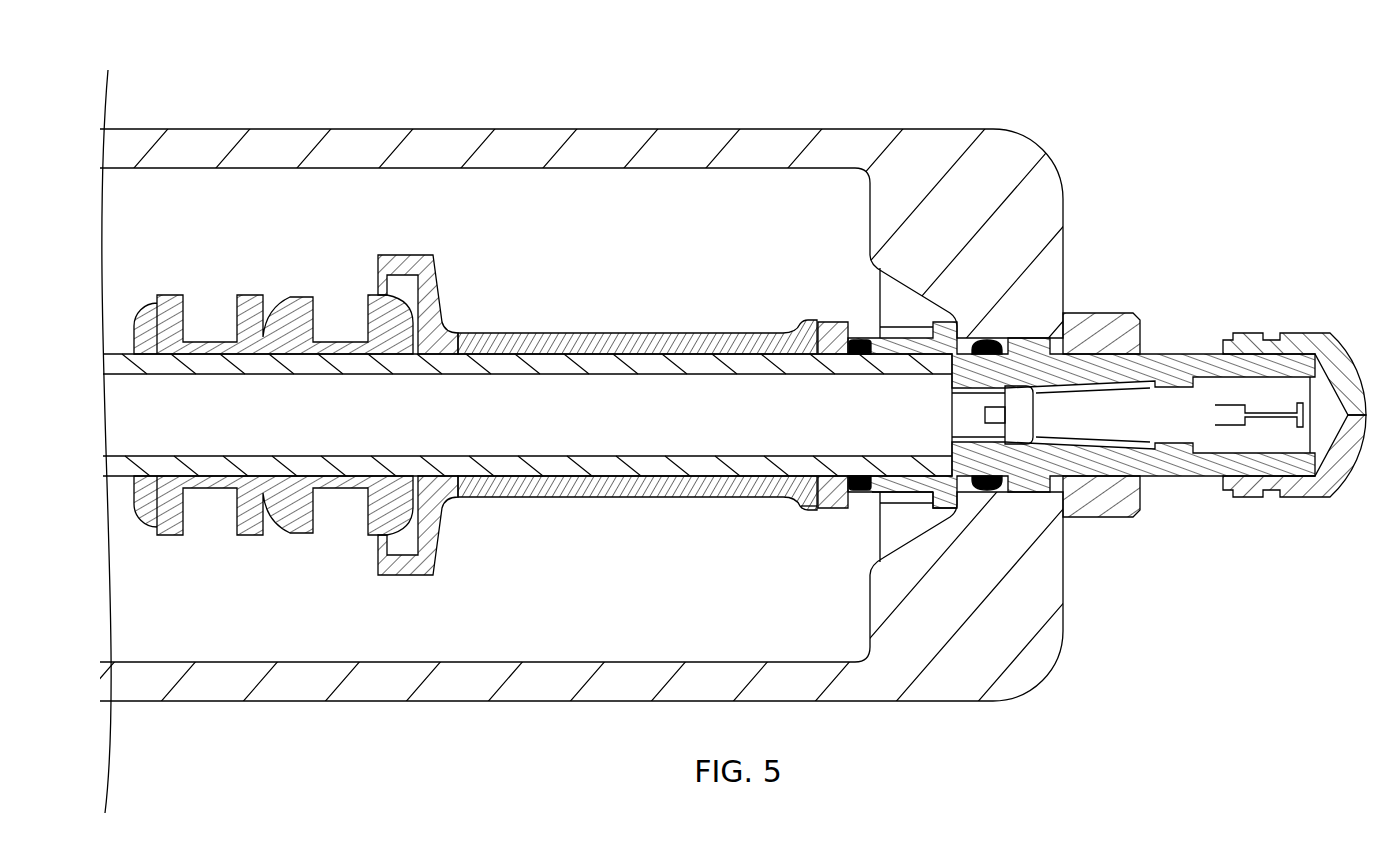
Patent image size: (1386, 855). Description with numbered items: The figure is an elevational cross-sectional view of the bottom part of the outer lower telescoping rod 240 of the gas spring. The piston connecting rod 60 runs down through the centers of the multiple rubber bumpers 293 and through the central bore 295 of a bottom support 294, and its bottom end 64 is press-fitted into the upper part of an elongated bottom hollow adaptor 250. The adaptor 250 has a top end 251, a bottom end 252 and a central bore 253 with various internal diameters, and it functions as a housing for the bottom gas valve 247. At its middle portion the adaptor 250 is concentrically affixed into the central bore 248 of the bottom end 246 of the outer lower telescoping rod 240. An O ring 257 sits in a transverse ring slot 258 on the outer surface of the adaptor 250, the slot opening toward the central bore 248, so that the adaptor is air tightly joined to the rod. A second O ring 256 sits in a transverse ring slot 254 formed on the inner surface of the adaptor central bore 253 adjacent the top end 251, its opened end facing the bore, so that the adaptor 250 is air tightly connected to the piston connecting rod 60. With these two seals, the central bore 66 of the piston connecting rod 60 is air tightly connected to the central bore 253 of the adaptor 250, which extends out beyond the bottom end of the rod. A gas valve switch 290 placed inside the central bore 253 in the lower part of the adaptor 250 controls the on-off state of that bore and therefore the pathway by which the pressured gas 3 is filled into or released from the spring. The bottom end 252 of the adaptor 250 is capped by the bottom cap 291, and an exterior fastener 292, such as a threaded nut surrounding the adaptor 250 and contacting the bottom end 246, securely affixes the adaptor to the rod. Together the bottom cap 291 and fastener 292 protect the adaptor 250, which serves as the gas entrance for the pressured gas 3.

The outer lower telescoping rod 240 is at (645, 92).
The bottom end of the outer lower telescoping rod 246 is at (1018, 148).
The piston connecting rod 60 is at (530, 463).
The central bore of the piston connecting rod 66 is at (441, 422).
The pressured gas 3 is at (678, 422).
The rubber bumpers 293 is at (304, 312).
The bottom support 294 is at (451, 495).
The central bore of the bottom support 295 is at (587, 494).
The O ring 256 is at (826, 322).
The transverse ring slot 254 is at (871, 338).
The central bore of the adaptor 253 is at (853, 492).
The top end of the adaptor 251 is at (807, 504).
The bottom end of the piston connecting rod 64 is at (882, 494).
The transverse ring slot 258 is at (958, 495).
The O ring 257 is at (988, 488).
The bottom hollow adaptor 250 is at (1017, 492).
The central bore of the bottom end 248 is at (990, 340).
The exterior fastener 292 is at (1098, 314).
The bottom gas valve 247 is at (1232, 318).
The bottom cap 291 is at (1330, 346).
The gas valve switch 290 is at (1177, 412).
The bottom end of the adaptor 252 is at (1286, 468).